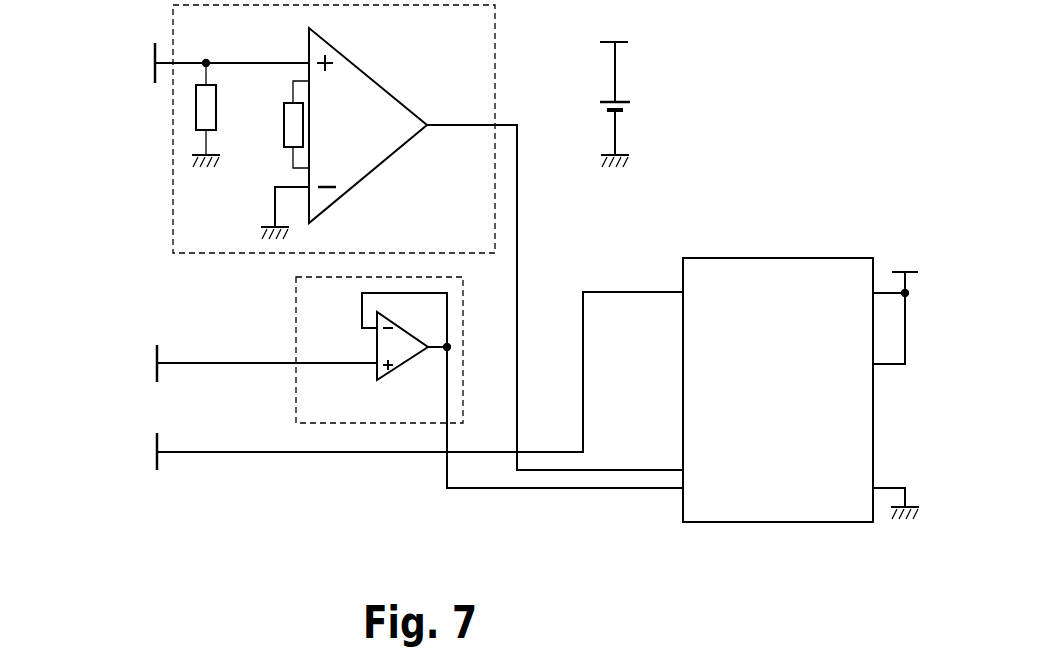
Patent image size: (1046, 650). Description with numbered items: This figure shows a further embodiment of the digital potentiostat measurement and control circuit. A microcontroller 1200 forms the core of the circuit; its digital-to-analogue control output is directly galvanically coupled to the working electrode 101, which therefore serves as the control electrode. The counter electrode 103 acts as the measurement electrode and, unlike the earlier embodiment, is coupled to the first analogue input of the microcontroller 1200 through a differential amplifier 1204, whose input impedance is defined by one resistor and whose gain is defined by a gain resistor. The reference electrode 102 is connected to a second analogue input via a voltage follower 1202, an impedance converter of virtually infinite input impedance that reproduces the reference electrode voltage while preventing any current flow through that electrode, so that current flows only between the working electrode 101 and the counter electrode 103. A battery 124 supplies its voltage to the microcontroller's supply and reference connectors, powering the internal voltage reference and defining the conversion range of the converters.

The working electrode 101 is at (150, 473).
The reference electrode 102 is at (150, 355).
The counter electrode 103 is at (143, 97).
The battery 124 is at (630, 70).
The microcontroller 1200 is at (797, 515).
The voltage follower 1202 is at (297, 385).
The differential amplifier 1204 is at (210, 240).